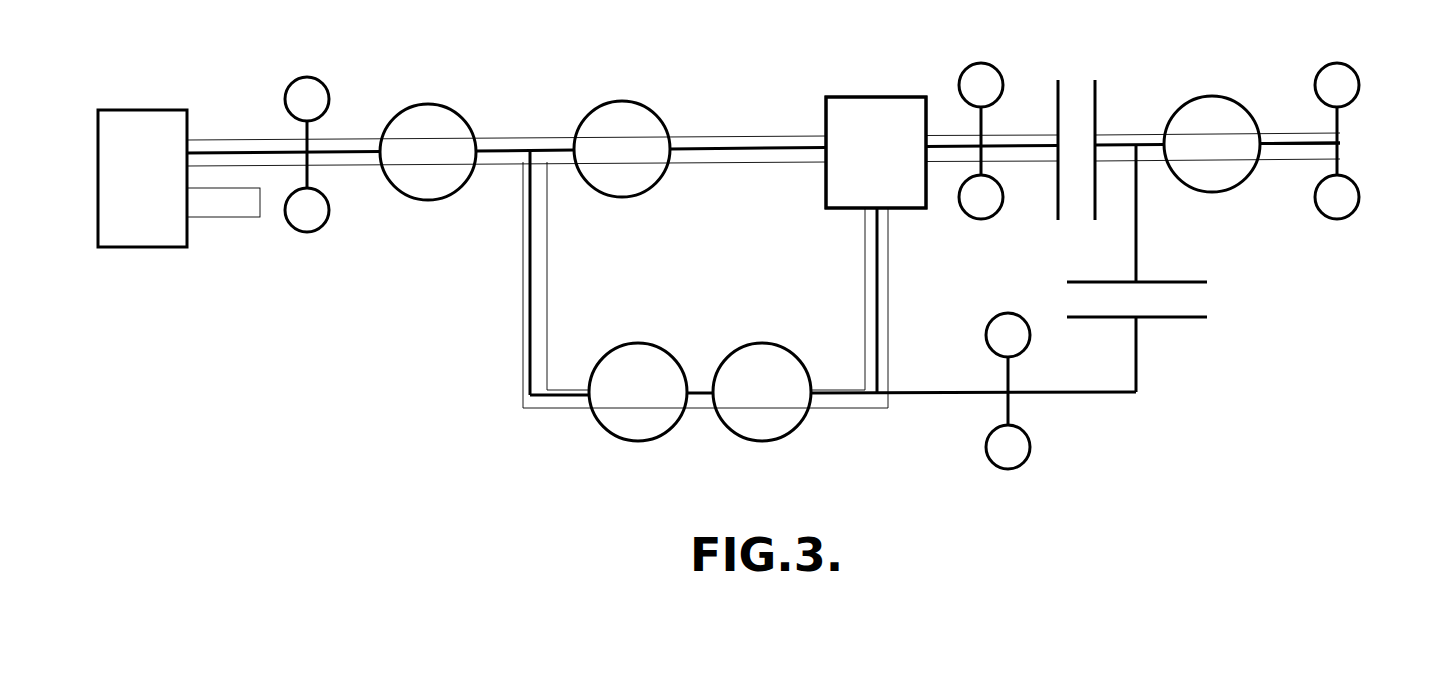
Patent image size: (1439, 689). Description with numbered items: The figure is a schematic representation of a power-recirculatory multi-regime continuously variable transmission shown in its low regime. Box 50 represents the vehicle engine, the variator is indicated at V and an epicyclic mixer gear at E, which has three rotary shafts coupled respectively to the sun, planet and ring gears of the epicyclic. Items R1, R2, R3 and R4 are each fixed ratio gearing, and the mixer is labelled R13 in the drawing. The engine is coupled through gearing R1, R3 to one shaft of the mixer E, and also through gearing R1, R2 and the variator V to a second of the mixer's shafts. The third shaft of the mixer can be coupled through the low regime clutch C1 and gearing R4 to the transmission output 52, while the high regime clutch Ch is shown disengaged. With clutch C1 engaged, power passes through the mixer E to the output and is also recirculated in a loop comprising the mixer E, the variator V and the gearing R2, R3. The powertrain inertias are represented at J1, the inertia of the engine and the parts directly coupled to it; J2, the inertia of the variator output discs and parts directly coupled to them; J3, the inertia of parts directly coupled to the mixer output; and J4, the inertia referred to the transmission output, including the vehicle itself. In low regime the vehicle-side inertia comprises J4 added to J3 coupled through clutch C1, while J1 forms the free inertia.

The vehicle engine 50 is at (162, 197).
The engine-side moment of inertia J1 is at (317, 135).
The fixed ratio gearing R1 is at (428, 152).
The fixed ratio gearing R2 is at (638, 392).
The fixed ratio gearing R3 is at (622, 149).
The fixed ratio gearing R4 is at (1212, 144).
The variator V is at (762, 392).
The epicyclic mixer gear E is at (876, 152).
The resistor R13 is at (876, 152).
The variator output inertia J2 is at (1034, 391).
The mixer output inertia J3 is at (994, 127).
The transmission output inertia J4 is at (1316, 127).
The low regime clutch C1 is at (1095, 112).
The high regime clutch Ch is at (1153, 318).
The transmission output 52 is at (1340, 147).